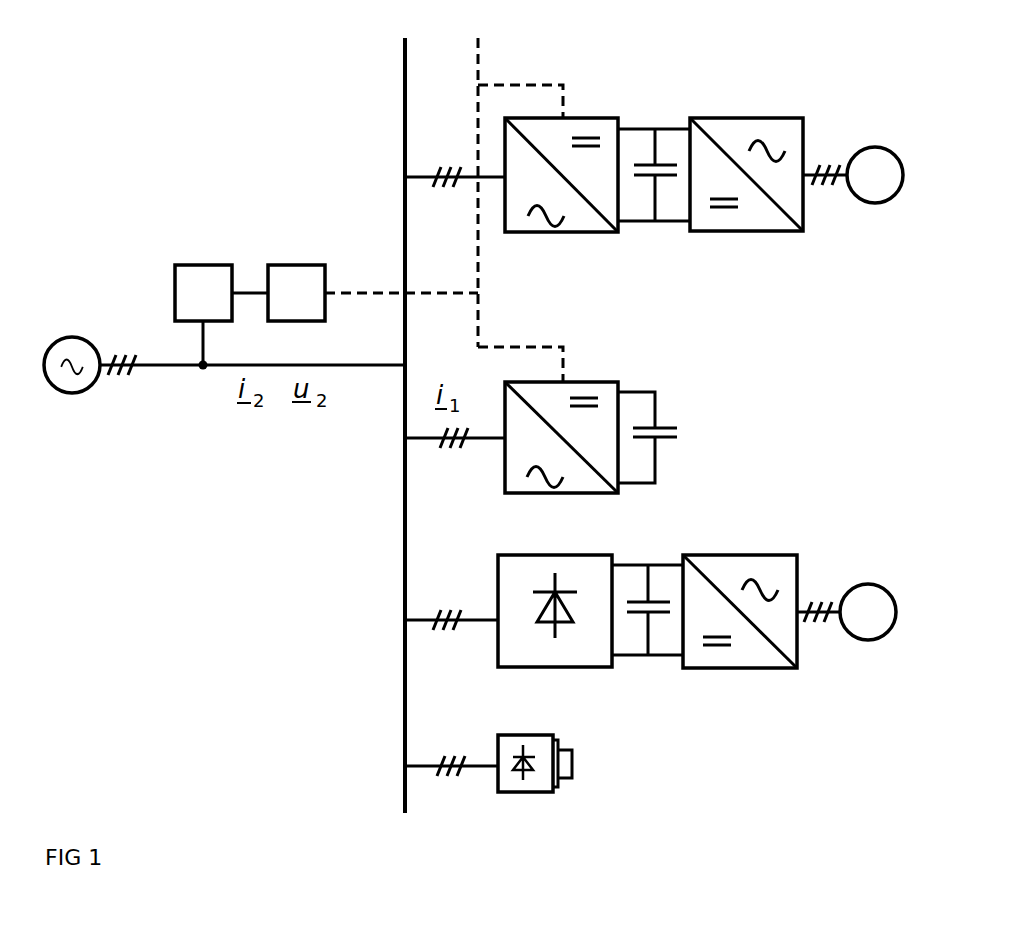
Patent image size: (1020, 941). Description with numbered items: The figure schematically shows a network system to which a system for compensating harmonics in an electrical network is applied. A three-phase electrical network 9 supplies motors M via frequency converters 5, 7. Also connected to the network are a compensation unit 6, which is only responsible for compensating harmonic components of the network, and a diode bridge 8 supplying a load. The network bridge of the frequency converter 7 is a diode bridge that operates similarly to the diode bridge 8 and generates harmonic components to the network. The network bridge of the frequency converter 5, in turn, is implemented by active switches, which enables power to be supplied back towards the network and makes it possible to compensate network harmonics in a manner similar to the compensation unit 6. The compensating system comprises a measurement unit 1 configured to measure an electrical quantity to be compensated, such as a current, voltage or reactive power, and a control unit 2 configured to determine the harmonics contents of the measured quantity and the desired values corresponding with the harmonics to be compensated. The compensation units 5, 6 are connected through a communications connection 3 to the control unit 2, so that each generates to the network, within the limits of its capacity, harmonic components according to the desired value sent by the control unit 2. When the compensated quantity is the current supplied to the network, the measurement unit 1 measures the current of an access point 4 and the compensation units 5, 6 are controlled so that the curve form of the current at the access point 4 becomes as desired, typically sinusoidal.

The measurement unit 1 is at (221, 266).
The control unit 2 is at (296, 266).
The communications connection 3 is at (444, 210).
The access point 4 is at (197, 365).
The frequency converter 5 is at (654, 155).
The compensation unit 6 is at (541, 417).
The frequency converter 7 is at (650, 589).
The diode bridge 8 is at (488, 743).
The three-phase electrical network 9 is at (392, 425).